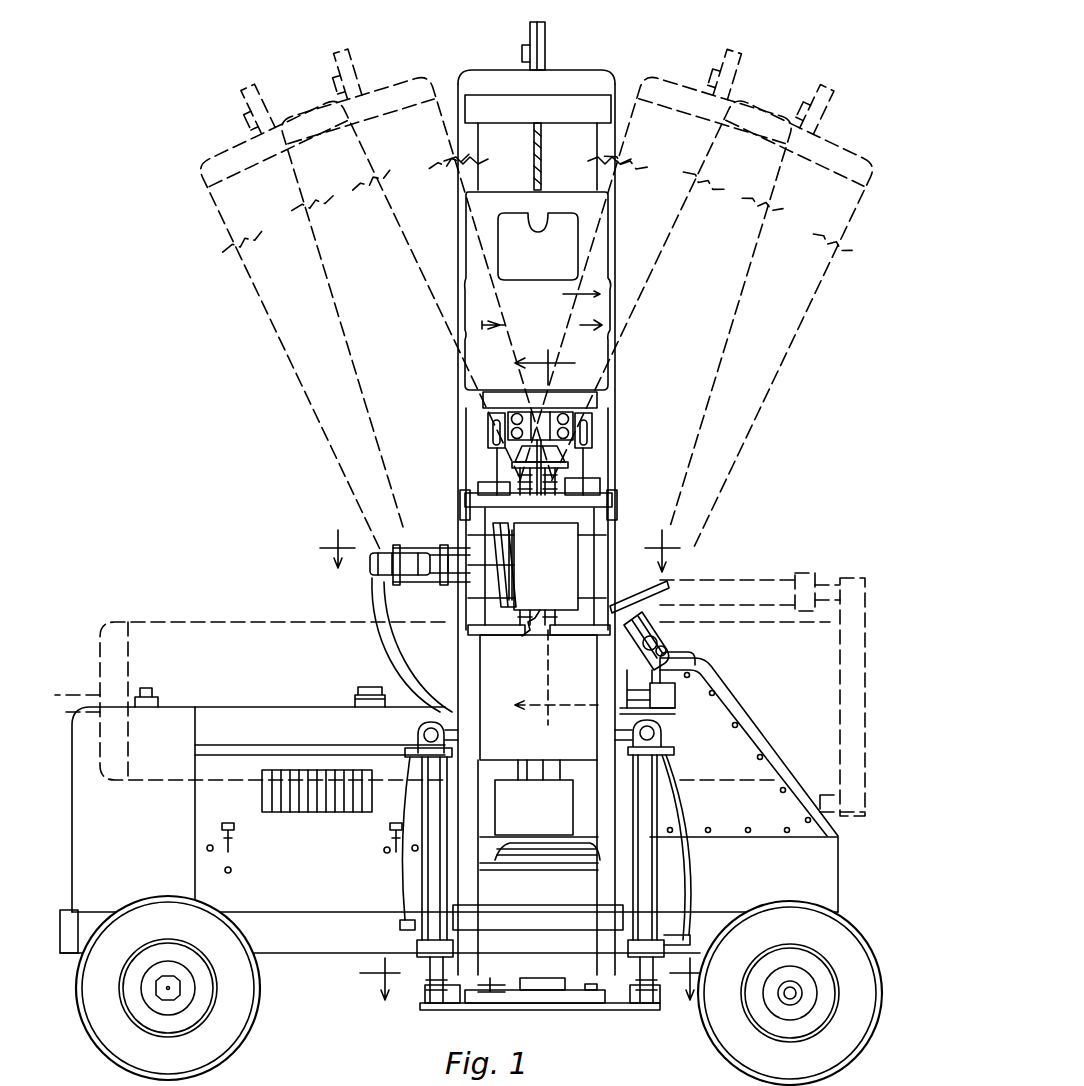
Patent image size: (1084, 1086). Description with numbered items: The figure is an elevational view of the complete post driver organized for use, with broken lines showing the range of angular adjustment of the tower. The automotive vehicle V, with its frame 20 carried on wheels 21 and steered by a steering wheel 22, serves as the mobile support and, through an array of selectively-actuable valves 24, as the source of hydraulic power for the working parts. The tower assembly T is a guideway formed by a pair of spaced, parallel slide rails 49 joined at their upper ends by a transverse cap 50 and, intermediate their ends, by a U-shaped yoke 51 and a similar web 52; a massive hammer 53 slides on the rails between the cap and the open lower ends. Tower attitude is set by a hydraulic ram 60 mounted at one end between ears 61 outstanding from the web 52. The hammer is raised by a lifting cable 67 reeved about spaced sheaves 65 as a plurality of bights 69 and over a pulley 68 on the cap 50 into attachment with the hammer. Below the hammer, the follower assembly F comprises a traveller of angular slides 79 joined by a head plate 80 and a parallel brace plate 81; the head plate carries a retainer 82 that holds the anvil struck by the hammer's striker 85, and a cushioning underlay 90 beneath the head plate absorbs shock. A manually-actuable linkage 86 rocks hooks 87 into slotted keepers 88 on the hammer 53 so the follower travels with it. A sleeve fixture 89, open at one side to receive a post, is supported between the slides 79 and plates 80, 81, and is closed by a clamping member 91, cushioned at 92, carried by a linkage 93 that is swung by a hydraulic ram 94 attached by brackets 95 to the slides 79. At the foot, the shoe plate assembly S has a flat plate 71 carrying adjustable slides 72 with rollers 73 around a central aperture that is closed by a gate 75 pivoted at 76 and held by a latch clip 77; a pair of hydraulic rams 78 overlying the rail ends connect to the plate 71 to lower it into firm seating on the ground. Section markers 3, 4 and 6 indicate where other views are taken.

The tower assembly T is at (523, 496).
The automotive vehicle V is at (263, 695).
The follower assembly F is at (560, 564).
The shoe plate assembly S is at (521, 1001).
The frame 20 is at (340, 945).
The wheels 21 is at (165, 927).
The steering wheel 22 is at (655, 605).
The selectively-actuable valves 24 is at (650, 636).
The slide rails 49 is at (462, 299).
The transverse cap 50 is at (485, 76).
The U-shaped yoke 51 is at (548, 925).
The web 52 is at (519, 705).
The hammer 53 is at (600, 357).
The hydraulic ram 60 is at (648, 690).
The ears 61 is at (749, 745).
The sheaves 65 is at (530, 631).
The hammer lifting cable 67 is at (532, 155).
The pulley 68 is at (545, 42).
The bights 69 is at (517, 564).
The plate 71 is at (588, 1010).
The slides 72 is at (552, 1003).
The rollers 73 is at (545, 983).
The gate 75 is at (515, 1003).
The pivotal connection 76 is at (592, 983).
The latch clip 77 is at (492, 986).
The hydraulic rams 78 is at (425, 889).
The slides 79 is at (465, 519).
The head plate 80 is at (560, 492).
The brace plate 81 is at (576, 631).
The retainer 82 is at (578, 480).
The striker 85 is at (520, 457).
The manually-actuable linkage 86 is at (508, 490).
The hooks 87 is at (497, 450).
The slotted keepers 88 is at (495, 428).
The sleeve fixture 89 is at (537, 566).
The cushioning underlay 90 is at (606, 499).
The clamping member 91 is at (525, 565).
The cushion 92 is at (527, 565).
The linkage 93 is at (447, 584).
The hydraulic ram 94 is at (374, 582).
The brackets 95 is at (430, 545).
The section line 3- 3 is at (534, 979).
The section line 4- 4 is at (498, 548).
The section line 6- 6 is at (556, 531).